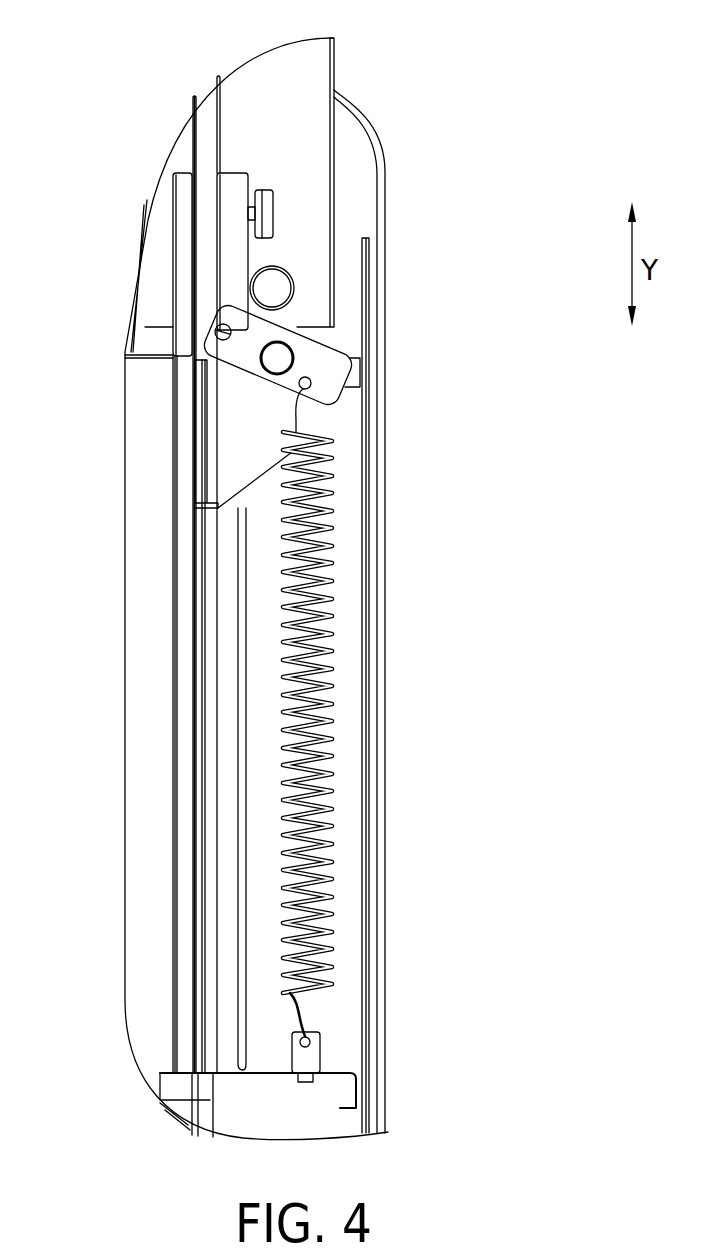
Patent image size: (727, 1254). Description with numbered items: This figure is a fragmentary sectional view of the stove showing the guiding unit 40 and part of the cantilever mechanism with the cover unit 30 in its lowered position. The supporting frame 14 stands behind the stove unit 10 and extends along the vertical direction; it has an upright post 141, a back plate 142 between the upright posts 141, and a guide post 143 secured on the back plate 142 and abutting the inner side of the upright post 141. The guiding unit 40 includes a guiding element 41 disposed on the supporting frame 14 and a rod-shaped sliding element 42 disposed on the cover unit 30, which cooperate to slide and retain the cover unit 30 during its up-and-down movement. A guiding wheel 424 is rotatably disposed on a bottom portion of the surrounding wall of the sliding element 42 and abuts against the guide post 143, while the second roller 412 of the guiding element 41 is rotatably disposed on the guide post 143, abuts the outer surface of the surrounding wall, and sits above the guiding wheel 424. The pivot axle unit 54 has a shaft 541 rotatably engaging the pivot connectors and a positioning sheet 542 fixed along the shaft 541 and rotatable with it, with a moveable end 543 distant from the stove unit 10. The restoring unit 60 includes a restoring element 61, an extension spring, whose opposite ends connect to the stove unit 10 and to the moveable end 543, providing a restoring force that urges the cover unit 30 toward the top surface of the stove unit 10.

The stove unit 10 is at (337, 1060).
The supporting frame 14 is at (383, 725).
The upright posts 141 is at (378, 683).
The back plate 142 is at (188, 852).
The guide posts 143 is at (233, 187).
The cover unit 30 is at (133, 250).
The guiding unit 40 is at (247, 86).
The guiding elements 41 is at (263, 190).
The second roller 412 is at (265, 217).
The sliding elements 42 is at (298, 74).
The guiding wheels 424 is at (273, 280).
The pivot axle unit 54 is at (282, 367).
The shaft 541 is at (277, 355).
The positioning sheets 542 is at (272, 327).
The moveable end 543 is at (325, 402).
The restoring unit 60 is at (340, 887).
The restoring elements 61 is at (333, 803).